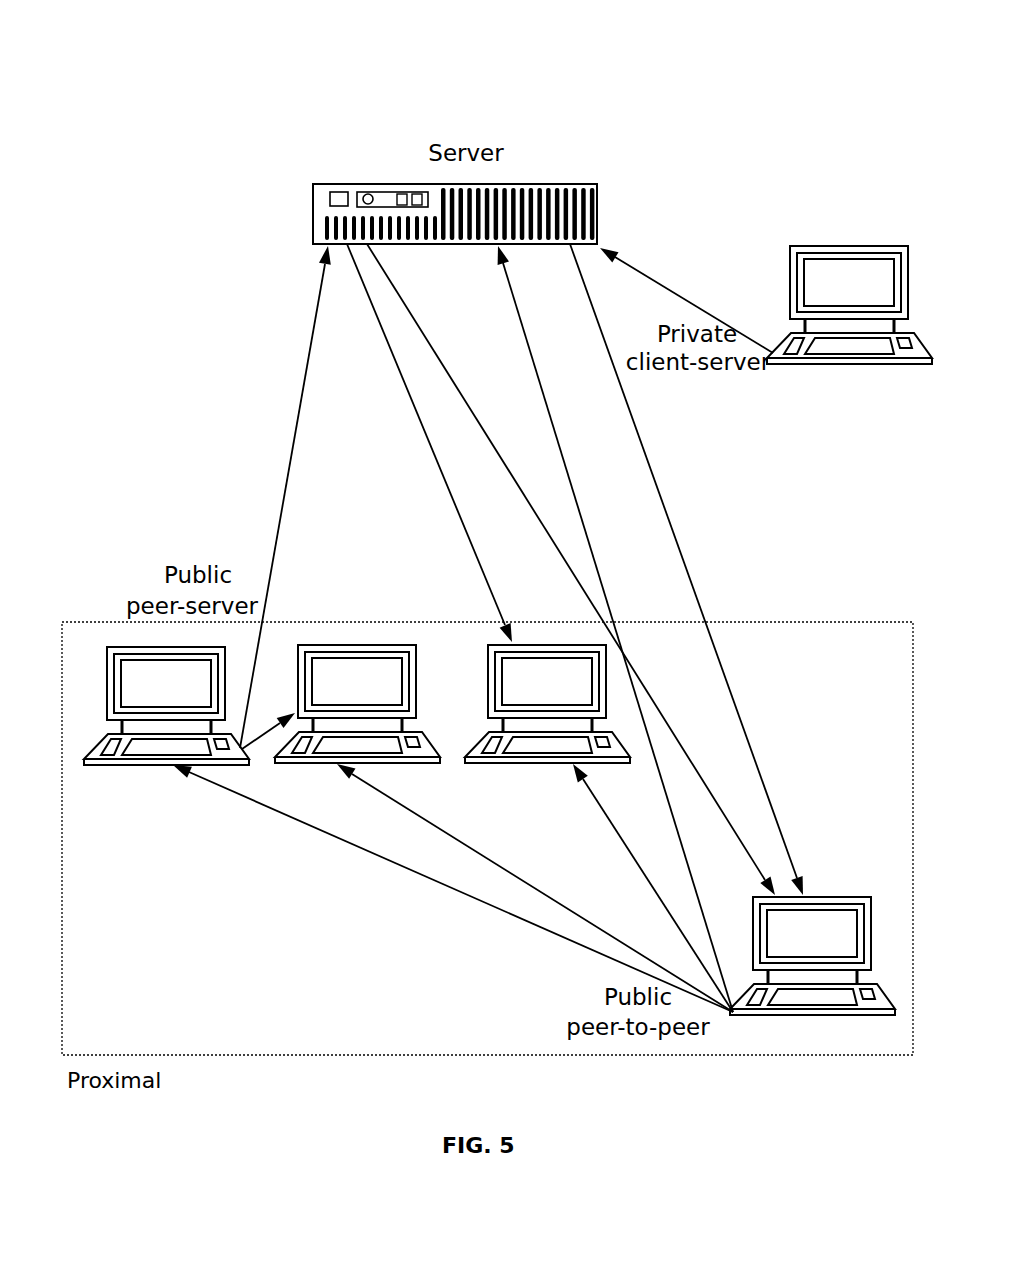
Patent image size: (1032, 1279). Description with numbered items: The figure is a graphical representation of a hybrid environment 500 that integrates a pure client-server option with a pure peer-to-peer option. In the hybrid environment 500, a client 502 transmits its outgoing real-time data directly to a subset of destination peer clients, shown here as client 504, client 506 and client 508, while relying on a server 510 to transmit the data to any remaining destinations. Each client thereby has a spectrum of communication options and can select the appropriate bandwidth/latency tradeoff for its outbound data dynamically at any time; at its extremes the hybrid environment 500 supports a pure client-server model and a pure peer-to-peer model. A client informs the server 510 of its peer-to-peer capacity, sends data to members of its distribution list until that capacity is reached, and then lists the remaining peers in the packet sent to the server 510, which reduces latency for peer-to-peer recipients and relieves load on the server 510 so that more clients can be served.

The hybrid environment 500 is at (561, 86).
The client 502 is at (828, 895).
The client 504 is at (148, 767).
The client 506 is at (417, 692).
The client 508 is at (520, 763).
The server 510 is at (565, 184).